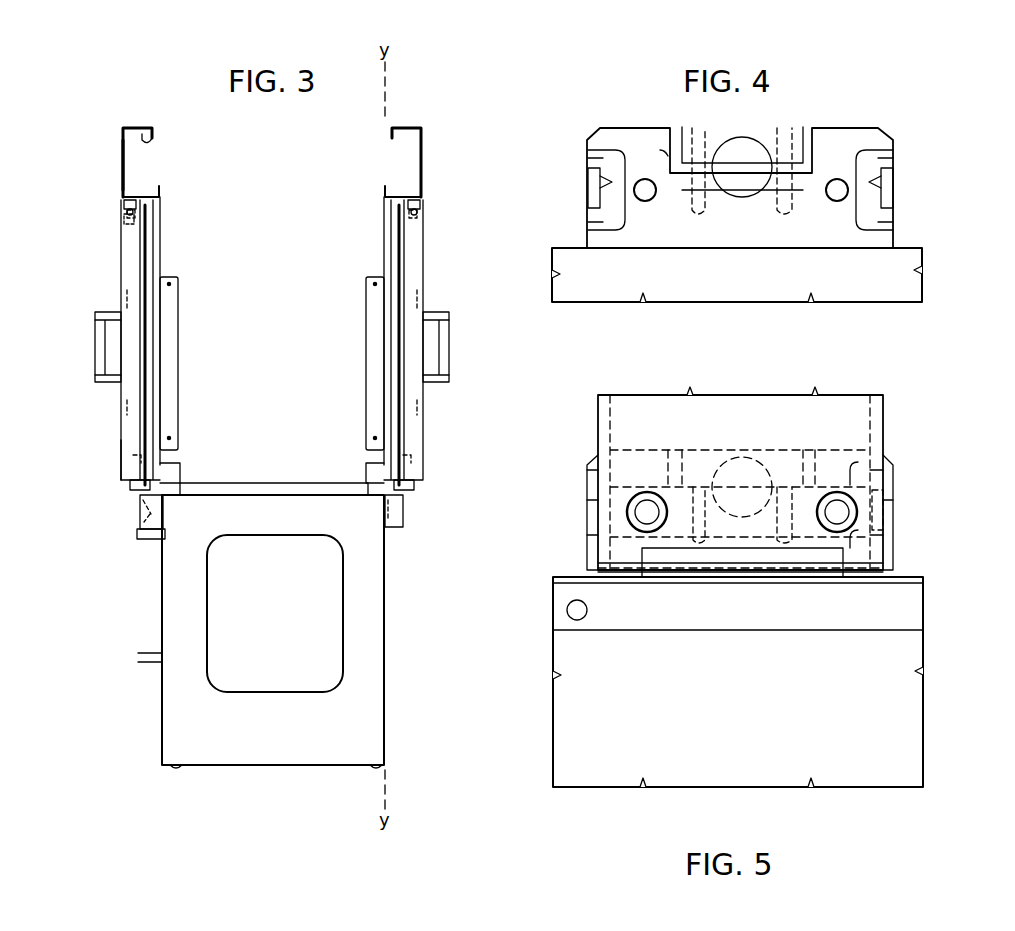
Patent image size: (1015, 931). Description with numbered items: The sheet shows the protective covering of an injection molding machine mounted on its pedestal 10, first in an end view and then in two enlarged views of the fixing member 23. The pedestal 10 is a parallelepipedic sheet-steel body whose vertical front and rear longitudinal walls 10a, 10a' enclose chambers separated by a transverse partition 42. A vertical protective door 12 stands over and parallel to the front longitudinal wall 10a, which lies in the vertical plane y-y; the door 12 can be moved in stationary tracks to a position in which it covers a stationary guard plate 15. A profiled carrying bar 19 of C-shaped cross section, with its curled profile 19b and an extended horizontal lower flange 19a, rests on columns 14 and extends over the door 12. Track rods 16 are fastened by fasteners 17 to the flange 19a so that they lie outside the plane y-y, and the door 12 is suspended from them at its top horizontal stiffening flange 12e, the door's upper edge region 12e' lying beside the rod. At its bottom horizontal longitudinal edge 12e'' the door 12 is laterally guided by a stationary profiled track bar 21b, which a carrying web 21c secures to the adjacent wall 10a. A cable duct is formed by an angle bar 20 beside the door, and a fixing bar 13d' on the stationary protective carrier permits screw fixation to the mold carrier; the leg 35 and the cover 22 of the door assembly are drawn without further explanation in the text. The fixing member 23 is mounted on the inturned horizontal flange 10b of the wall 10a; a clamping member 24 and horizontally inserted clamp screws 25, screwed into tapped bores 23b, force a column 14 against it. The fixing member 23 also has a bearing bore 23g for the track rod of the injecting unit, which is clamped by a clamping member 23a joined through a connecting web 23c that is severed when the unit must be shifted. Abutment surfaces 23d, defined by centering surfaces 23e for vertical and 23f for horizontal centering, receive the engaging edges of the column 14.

In FIG. 3, the pedestal 10 is at (157, 723).
In FIG. 4, the pedestal 10 is at (926, 284).
In FIG. 5, the pedestal 10 is at (926, 655).
In FIG. 3, the front longitudinal wall 10a is at (425, 630).
In FIG. 3, the rear longitudinal wall 10a' is at (118, 630).
In FIG. 3, the inturned horizontal flange 10b is at (138, 540).
In FIG. 3, the protective door 12 is at (118, 396).
In FIG. 3, the horizontal stiffening flange 12e is at (85, 460).
In FIG. 3, the door edge 12e' is at (86, 233).
In FIG. 3, the bottom horizontal longitudinal edge 12e'' is at (95, 485).
In FIG. 3, the fixing bar 13d' is at (205, 363).
In FIG. 3, the column 14 is at (393, 378).
In FIG. 4, the column 14 is at (742, 158).
In FIG. 5, the column 14 is at (746, 422).
In FIG. 3, the guard plate 15 is at (143, 314).
In FIG. 3, the track rod 16 is at (122, 209).
In FIG. 3, the fastener 17 is at (124, 203).
In FIG. 3, the carrying bar 19 is at (118, 126).
In FIG. 3, the horizontal lower flange 19a is at (147, 190).
In FIG. 3, the carrying bar flange 19b is at (152, 142).
In FIG. 3, the angle bar 20 is at (402, 535).
In FIG. 5, the profiled track bar 21b is at (715, 560).
In FIG. 5, the carrying web 21c is at (625, 583).
In FIG. 3, the cover 22 is at (122, 250).
In FIG. 4, the fixing member 23 is at (852, 124).
In FIG. 5, the fixing member 23 is at (837, 447).
In FIG. 4, the clamping member 23a is at (717, 142).
In FIG. 5, the clamping member 23a is at (720, 460).
In FIG. 4, the tapped bore 23b is at (638, 180).
In FIG. 4, the connecting web 23c is at (800, 168).
In FIG. 4, the abutment surface 23d is at (612, 162).
In FIG. 5, the abutment surface 23d is at (880, 482).
In FIG. 4, the vertical centering surface 23e is at (598, 152).
In FIG. 5, the vertical centering surface 23e is at (880, 470).
In FIG. 4, the horizontal centering surface 23f is at (610, 182).
In FIG. 5, the horizontal centering surface 23f is at (882, 505).
In FIG. 4, the bearing bore 23g is at (683, 167).
In FIG. 5, the clamping member 24 is at (677, 497).
In FIG. 5, the clamp screw 25 is at (600, 470).
In FIG. 3, the hook leg 35 is at (122, 146).
In FIG. 3, the transverse partition 42 is at (281, 619).